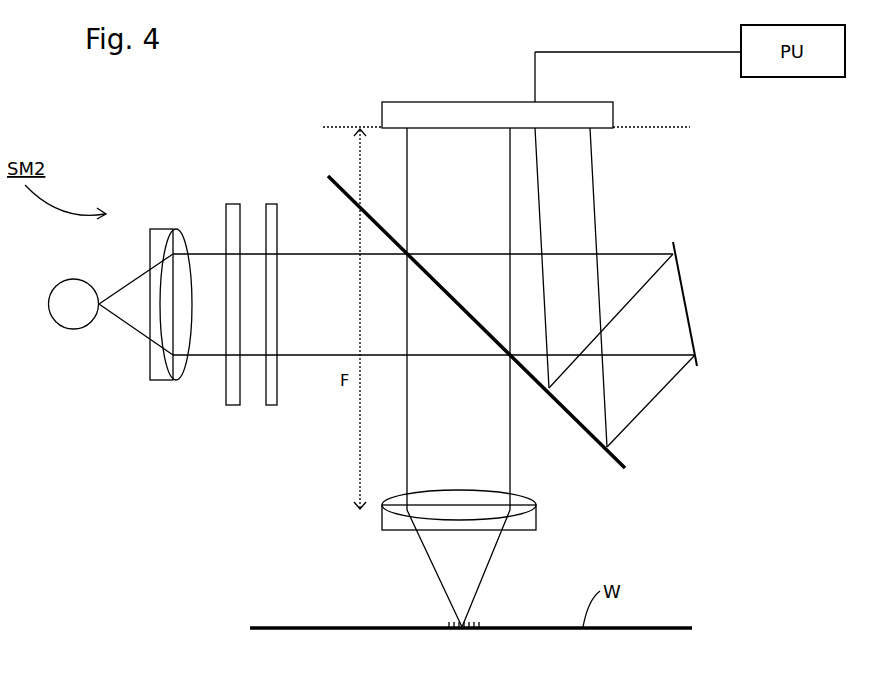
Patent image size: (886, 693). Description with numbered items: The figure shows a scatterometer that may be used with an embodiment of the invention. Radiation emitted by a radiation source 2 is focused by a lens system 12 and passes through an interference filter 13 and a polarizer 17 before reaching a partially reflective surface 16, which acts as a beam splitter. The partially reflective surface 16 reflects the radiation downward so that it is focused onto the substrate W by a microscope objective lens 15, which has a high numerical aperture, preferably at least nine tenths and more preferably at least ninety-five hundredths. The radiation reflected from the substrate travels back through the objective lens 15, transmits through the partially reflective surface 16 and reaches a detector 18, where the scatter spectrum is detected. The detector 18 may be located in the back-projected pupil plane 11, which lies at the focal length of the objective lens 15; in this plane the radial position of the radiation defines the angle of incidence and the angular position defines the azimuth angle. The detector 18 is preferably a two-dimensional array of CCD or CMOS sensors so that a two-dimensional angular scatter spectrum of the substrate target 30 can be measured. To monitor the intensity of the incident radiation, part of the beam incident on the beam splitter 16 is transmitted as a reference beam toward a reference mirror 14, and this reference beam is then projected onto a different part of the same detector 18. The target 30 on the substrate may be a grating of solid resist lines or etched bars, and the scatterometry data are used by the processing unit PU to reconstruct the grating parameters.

The radiation source 2 is at (74, 304).
The back-projected pupil plane 11 is at (690, 127).
The lens system 12 is at (160, 229).
The interference filter 13 is at (235, 204).
The reference mirror 14 is at (676, 246).
The microscope objective lens 15 is at (382, 519).
The partially reflective surface 16 is at (609, 455).
The polarizer 17 is at (272, 204).
The detector 18 is at (415, 102).
The substrate target 30 is at (472, 637).